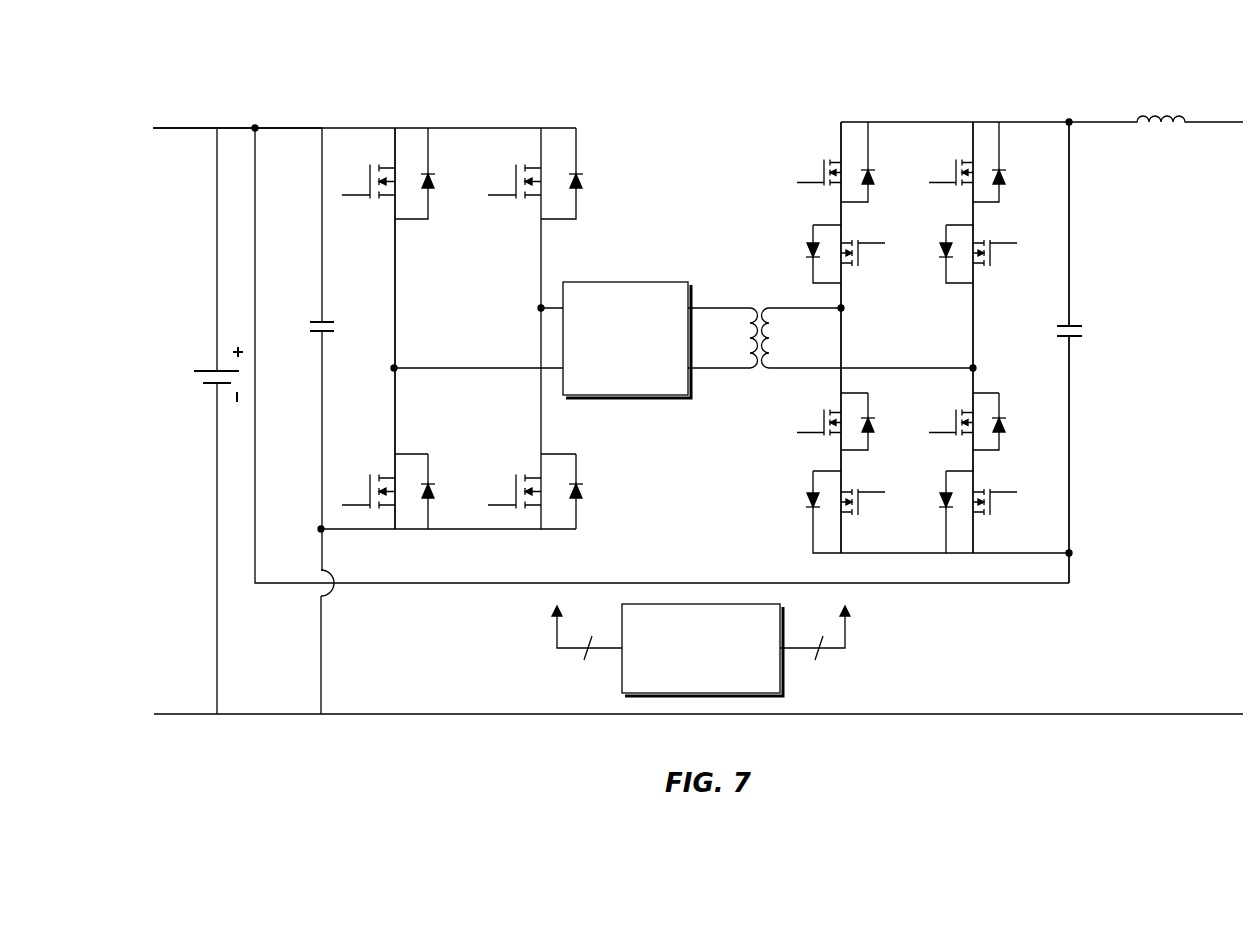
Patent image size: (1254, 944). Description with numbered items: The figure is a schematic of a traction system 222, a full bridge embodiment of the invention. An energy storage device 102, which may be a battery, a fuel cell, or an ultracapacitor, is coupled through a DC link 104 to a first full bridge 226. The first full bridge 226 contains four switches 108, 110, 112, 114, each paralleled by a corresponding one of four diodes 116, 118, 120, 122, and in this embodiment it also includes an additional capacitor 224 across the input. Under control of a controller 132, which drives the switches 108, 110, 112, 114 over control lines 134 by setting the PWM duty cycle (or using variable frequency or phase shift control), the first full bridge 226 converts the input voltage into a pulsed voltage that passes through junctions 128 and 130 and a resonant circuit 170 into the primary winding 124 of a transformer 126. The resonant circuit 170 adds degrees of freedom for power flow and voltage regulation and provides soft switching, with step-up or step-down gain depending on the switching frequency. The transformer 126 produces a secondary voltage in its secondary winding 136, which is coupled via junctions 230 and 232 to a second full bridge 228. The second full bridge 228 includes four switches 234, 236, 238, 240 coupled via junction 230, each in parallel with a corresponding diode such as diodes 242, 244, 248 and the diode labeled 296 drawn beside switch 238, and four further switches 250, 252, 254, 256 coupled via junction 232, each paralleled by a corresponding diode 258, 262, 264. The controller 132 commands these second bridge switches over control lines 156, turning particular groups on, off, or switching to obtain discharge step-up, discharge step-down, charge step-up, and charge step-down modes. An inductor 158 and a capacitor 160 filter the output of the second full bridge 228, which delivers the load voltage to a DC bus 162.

The energy storage device 102 is at (181, 389).
The DC link 104 is at (238, 127).
The switch 108 is at (381, 162).
The switch 110 is at (381, 469).
The switch 112 is at (532, 162).
The switch 114 is at (532, 469).
The diode 116 is at (481, 194).
The diode 118 is at (481, 501).
The diode 120 is at (633, 194).
The diode 122 is at (633, 501).
The primary winding 124 is at (735, 349).
The transformer 126 is at (830, 323).
The junction 128 is at (395, 366).
The junction 130 is at (540, 310).
The controller 132 is at (723, 672).
The control lines 134 is at (610, 687).
The secondary winding 136 is at (821, 349).
The control lines 156 is at (833, 687).
The inductor 158 is at (1179, 105).
The capacitor 160 is at (933, 264).
The DC bus 162 is at (1198, 477).
The resonant circuit 170 is at (644, 378).
The traction system 222 is at (853, 58).
The capacitor 224 is at (304, 338).
The first full bridge 226 is at (493, 103).
The second full bridge 228 is at (953, 95).
The junction 230 is at (843, 310).
The junction 232 is at (972, 366).
The switch 234 is at (832, 153).
The switch 236 is at (888, 294).
The switch 238 is at (832, 399).
The switch 240 is at (888, 544).
The diode 242 is at (918, 189).
The diode 244 is at (800, 264).
The diode 248 is at (800, 511).
The switch 250 is at (964, 153).
The switch 252 is at (1018, 294).
The switch 254 is at (966, 399).
The switch 256 is at (1021, 544).
The diode 258 is at (1050, 189).
The diode 262 is at (1051, 434).
The diode 264 is at (931, 511).
The diode 296 is at (920, 434).